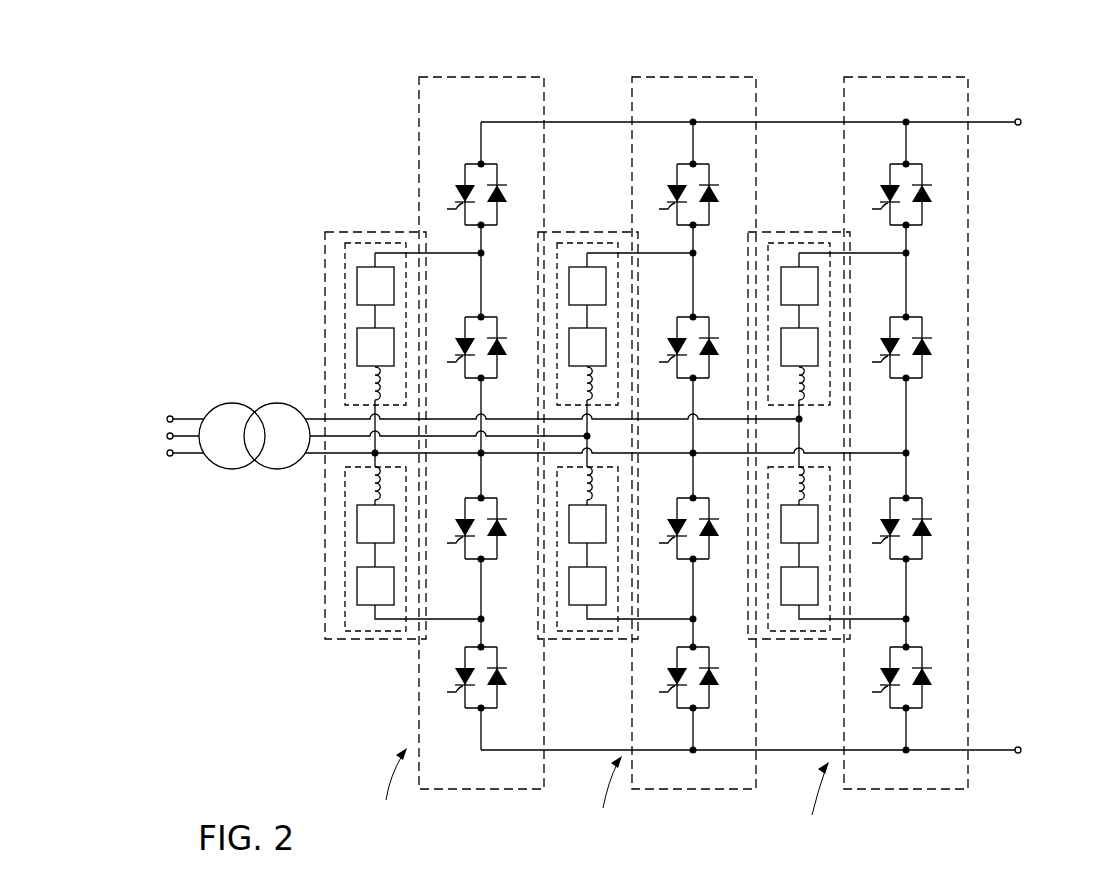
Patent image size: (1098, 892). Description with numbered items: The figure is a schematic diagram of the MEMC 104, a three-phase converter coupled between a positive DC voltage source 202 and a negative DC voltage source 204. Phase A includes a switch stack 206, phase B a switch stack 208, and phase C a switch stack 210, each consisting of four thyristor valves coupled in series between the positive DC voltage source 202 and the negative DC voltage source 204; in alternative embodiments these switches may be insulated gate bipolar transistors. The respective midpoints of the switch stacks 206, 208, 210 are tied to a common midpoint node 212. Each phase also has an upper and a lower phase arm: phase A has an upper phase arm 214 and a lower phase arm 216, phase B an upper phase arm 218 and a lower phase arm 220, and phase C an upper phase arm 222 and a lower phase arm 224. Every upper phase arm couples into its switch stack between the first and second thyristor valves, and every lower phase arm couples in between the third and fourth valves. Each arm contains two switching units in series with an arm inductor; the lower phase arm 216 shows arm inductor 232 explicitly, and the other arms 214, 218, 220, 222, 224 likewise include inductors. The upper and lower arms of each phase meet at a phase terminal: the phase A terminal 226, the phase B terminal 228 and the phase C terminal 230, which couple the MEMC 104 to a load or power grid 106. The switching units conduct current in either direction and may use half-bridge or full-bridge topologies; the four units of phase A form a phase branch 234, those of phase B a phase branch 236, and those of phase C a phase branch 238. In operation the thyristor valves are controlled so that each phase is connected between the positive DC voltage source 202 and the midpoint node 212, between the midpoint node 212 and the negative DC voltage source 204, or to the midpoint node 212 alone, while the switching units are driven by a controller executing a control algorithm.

The MEMC 104 is at (254, 106).
The load or power grid 106 is at (228, 470).
The positive DC voltage source 202 is at (1022, 122).
The negative DC voltage source 204 is at (1022, 750).
The switch stack 206 is at (419, 122).
The switch stack 208 is at (632, 88).
The switch stack 210 is at (844, 88).
The midpoint node 212 is at (880, 454).
The upper phase arm 214 is at (375, 232).
The lower phase arm 216 is at (370, 571).
The upper phase arm 218 is at (590, 243).
The lower phase arm 220 is at (588, 632).
The upper phase arm 222 is at (800, 242).
The lower phase arm 224 is at (800, 632).
The phase A terminal 226 is at (372, 456).
The phase B terminal 228 is at (585, 436).
The phase C terminal 230 is at (802, 419).
The arm inductor 232 is at (372, 497).
The phase branch 234 is at (366, 430).
The phase branch 236 is at (615, 450).
The phase branch 238 is at (853, 438).